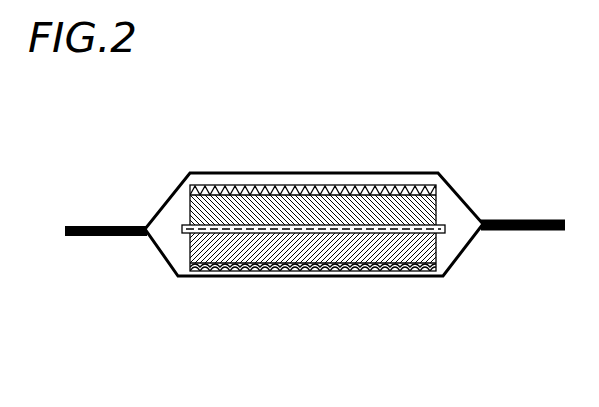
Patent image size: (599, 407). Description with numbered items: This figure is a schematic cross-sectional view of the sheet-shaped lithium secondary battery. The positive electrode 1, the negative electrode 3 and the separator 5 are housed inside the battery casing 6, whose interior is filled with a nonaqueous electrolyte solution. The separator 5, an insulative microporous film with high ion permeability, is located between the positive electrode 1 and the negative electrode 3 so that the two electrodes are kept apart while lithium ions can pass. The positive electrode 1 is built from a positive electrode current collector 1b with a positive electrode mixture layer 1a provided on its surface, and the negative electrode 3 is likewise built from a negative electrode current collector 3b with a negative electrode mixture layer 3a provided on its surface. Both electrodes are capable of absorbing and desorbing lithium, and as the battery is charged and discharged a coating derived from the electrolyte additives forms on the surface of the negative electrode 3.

The positive electrode 1 is at (339, 284).
The positive electrode mixture layer 1a is at (427, 248).
The positive electrode current collector 1b is at (408, 277).
The negative electrode 3 is at (331, 162).
The negative electrode mixture layer 3a is at (313, 167).
The negative electrode current collector 3b is at (372, 187).
The separator 5 is at (347, 233).
The battery casing 6 is at (110, 237).